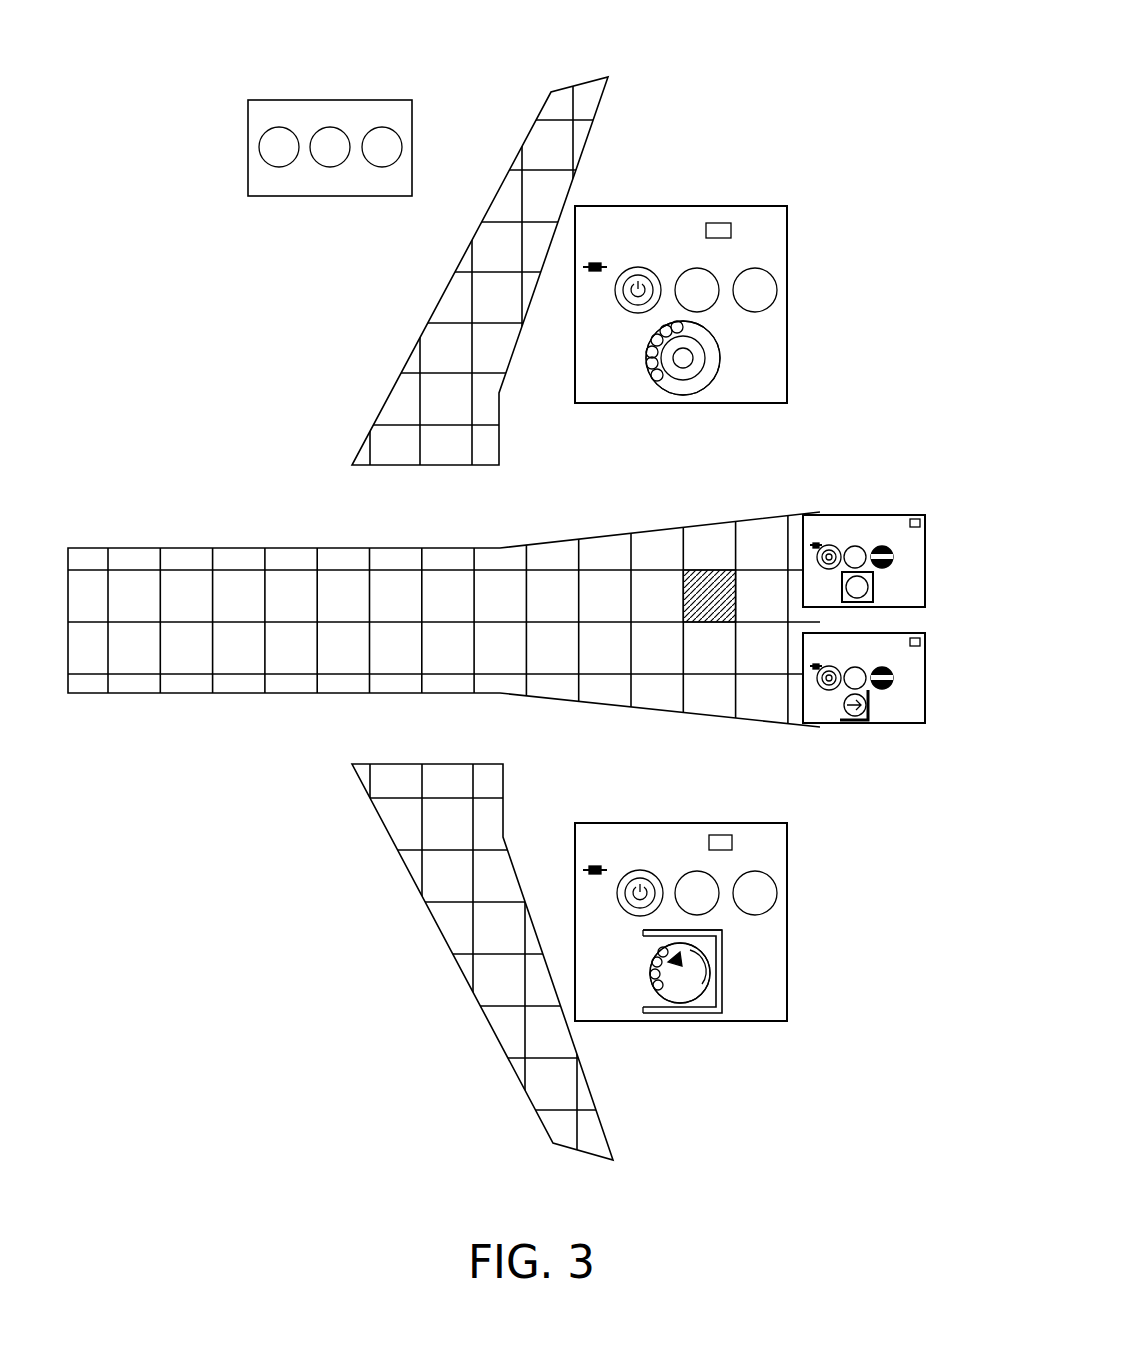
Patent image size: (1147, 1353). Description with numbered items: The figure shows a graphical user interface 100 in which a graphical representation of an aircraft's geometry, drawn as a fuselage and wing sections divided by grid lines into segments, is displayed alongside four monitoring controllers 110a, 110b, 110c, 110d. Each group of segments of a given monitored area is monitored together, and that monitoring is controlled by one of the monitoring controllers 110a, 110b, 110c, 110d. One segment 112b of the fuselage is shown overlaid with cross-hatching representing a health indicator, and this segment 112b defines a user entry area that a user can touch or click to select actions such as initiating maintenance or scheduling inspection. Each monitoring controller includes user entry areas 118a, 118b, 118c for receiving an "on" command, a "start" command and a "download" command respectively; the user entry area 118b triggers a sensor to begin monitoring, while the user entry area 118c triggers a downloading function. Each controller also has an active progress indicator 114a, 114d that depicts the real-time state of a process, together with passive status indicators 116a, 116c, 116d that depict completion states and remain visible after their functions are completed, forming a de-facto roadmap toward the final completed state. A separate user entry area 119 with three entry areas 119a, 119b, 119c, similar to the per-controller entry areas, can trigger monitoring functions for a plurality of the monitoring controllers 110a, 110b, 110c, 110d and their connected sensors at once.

The graphical user interface 100 is at (808, 128).
The monitoring controller 110a is at (741, 320).
The monitoring controller 110b is at (872, 515).
The monitoring controller 110c is at (850, 725).
The monitoring controller 110d is at (743, 954).
The segment 112b is at (703, 570).
The active progress indicator 114a is at (707, 353).
The active progress indicator 114d is at (666, 980).
The passive status indicator 116a is at (713, 383).
The passive status indicator 116c is at (870, 587).
The passive status indicator 116d is at (695, 927).
The user entry area 118a is at (623, 308).
The user entry area 118b is at (712, 272).
The user entry area 118c is at (777, 299).
The user entry area 119 is at (367, 147).
The user entry area 119a is at (279, 157).
The user entry area 119b is at (330, 157).
The user entry area 119c is at (380, 157).